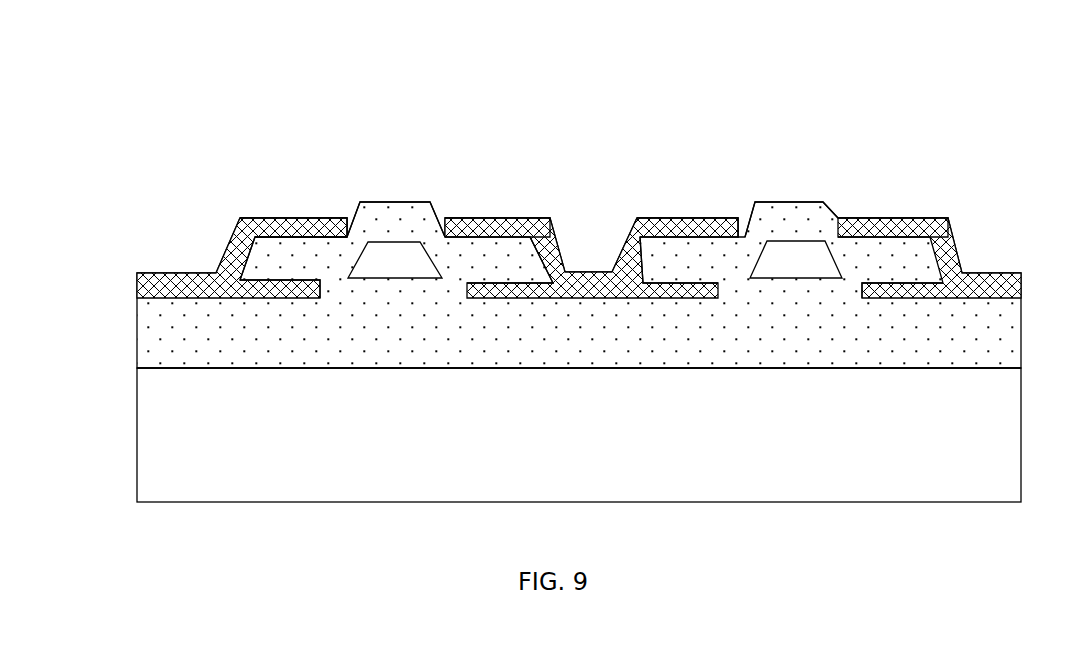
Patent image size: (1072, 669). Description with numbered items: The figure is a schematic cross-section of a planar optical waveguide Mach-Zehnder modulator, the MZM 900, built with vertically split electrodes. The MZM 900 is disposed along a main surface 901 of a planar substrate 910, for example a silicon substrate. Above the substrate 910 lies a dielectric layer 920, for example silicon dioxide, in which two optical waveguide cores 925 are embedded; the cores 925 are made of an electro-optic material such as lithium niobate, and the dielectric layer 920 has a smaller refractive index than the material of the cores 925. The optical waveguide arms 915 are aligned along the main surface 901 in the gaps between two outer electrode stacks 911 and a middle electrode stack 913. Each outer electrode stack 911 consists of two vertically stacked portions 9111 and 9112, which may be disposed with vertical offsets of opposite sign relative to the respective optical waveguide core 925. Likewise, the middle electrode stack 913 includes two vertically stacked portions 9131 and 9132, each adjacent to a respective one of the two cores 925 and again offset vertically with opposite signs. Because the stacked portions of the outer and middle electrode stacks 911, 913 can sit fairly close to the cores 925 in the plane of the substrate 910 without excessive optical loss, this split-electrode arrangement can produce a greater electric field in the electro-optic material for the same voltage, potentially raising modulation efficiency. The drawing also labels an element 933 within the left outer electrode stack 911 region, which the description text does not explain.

The optical waveguide MZM 900 is at (571, 256).
The main surface 901 is at (203, 365).
The planar substrate 910 is at (575, 454).
The outer electrode stack 911 is at (252, 162).
The vertically stacked portion of outer electrode stack 9111 is at (868, 218).
The vertically stacked portion of outer electrode stack 9112 is at (303, 280).
The middle electrode stack 913 is at (617, 148).
The vertically stacked portion of middle electrode stack 9131 is at (477, 218).
The vertically stacked portion of middle electrode stack 9132 is at (493, 283).
The optical waveguide arm 915 is at (373, 300).
The dielectric layer 920 is at (575, 346).
The optical waveguide core 925 is at (388, 242).
The recess region 933 is at (277, 263).